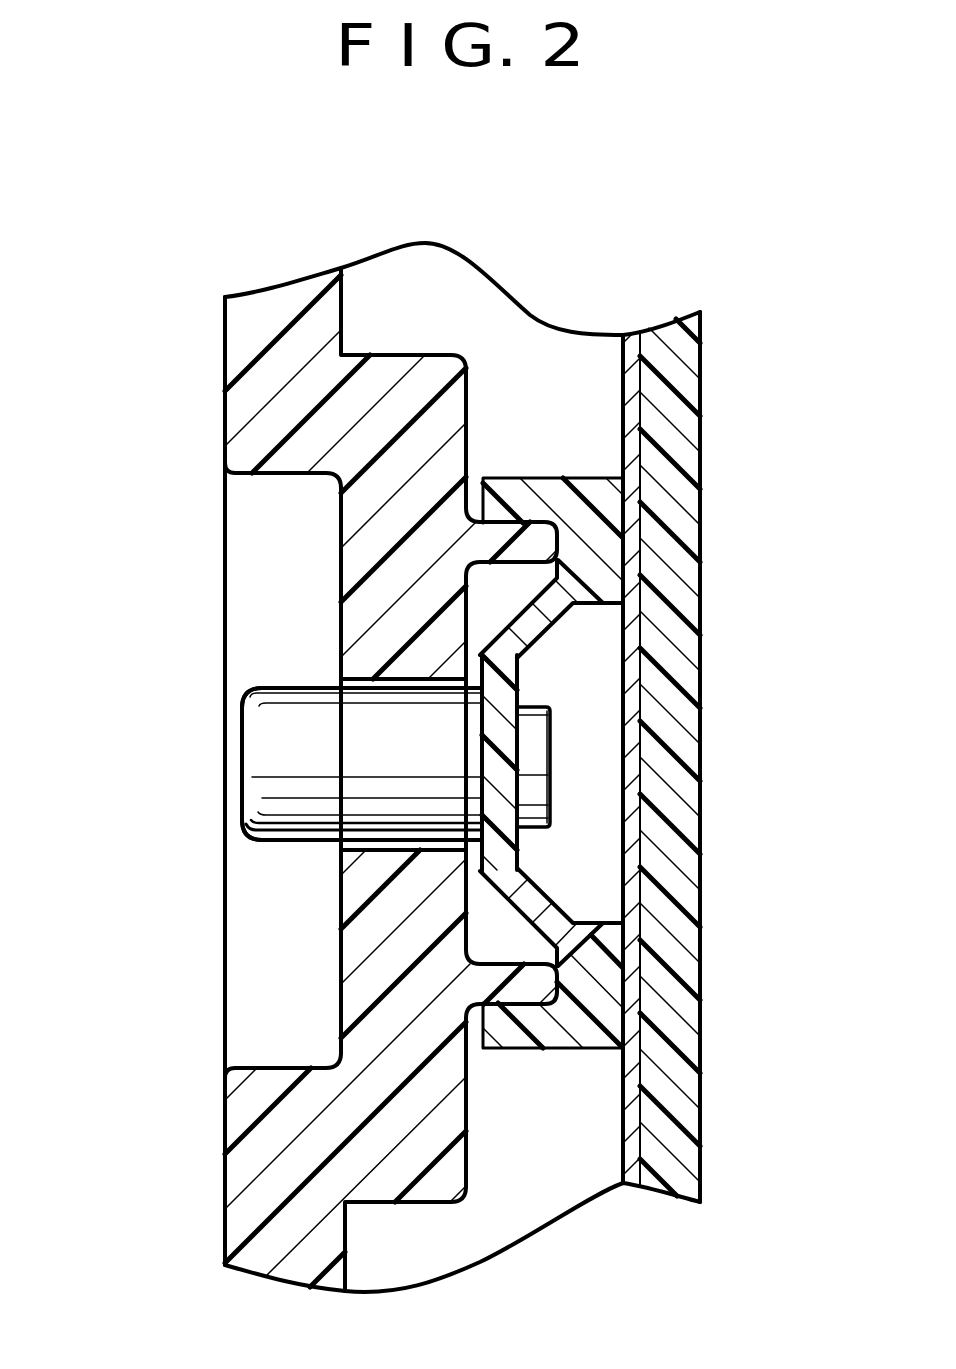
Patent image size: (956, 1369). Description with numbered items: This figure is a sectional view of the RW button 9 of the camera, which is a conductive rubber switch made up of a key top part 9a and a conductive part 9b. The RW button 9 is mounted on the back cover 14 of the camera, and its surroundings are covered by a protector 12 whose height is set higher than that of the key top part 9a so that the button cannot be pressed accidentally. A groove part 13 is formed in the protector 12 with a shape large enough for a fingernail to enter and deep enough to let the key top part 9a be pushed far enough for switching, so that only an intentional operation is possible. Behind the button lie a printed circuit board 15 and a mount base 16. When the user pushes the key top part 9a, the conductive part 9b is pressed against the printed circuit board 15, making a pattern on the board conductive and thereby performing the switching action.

The RW button 9 is at (275, 728).
The key top part 9a is at (242, 787).
The conductive part 9b is at (552, 755).
The protector 12 is at (222, 597).
The groove part 13 is at (341, 526).
The back cover 14 is at (250, 1163).
The printed circuit board 15 is at (618, 386).
The mount base 16 is at (688, 427).